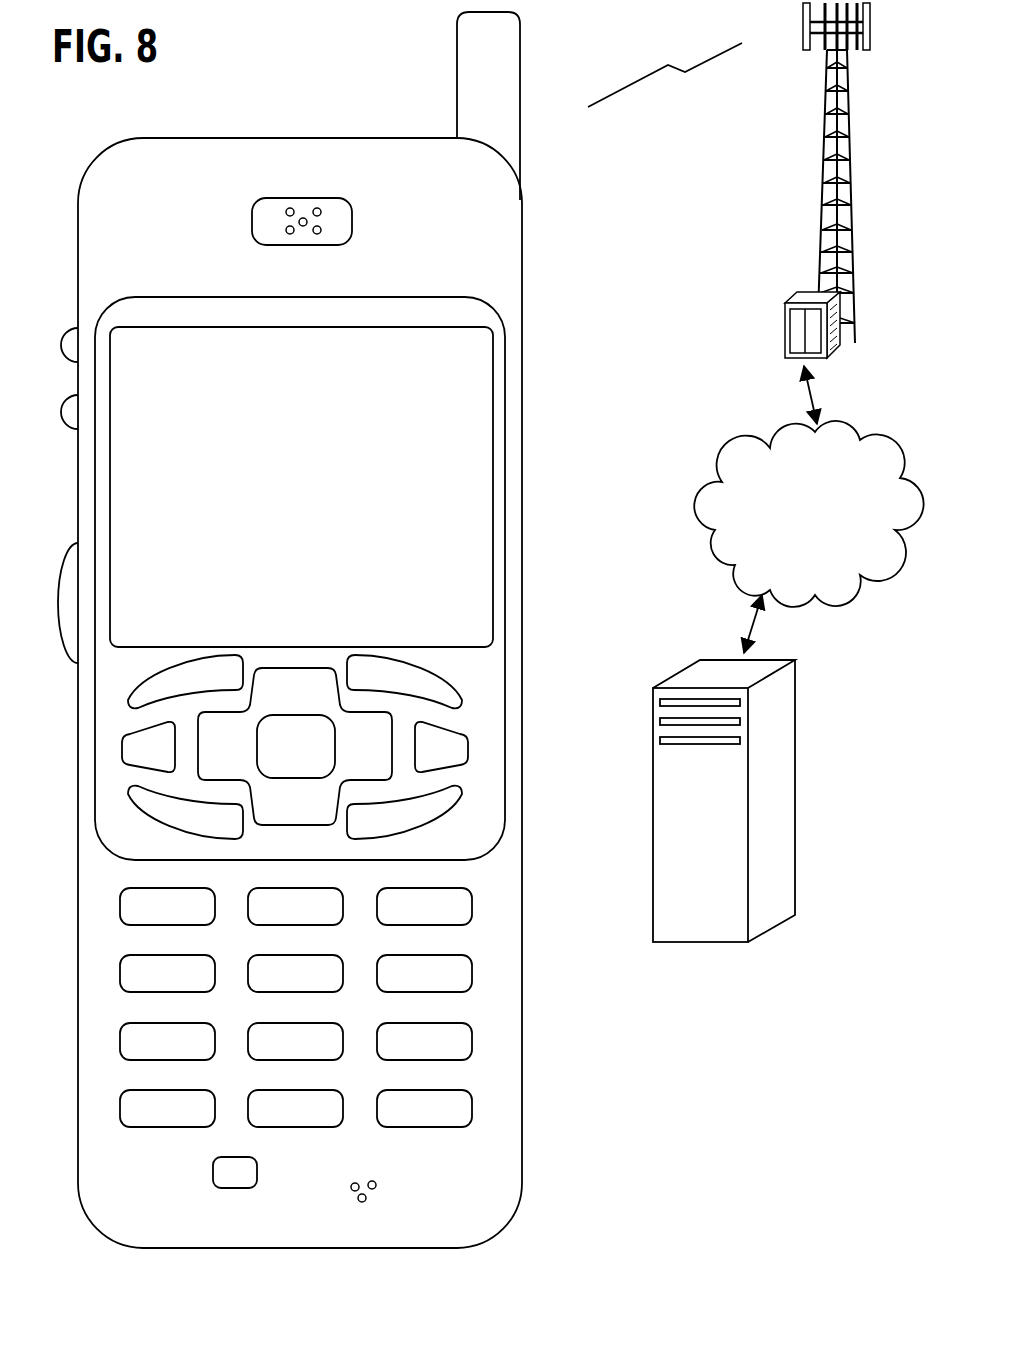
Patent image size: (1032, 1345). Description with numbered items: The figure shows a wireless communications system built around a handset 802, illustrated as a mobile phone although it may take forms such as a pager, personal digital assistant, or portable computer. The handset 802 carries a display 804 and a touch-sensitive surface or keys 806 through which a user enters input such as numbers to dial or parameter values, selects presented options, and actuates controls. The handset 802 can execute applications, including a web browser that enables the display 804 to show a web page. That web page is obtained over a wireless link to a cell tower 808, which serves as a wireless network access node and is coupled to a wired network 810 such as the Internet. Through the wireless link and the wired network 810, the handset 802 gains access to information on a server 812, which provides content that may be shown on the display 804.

The handset 802 is at (132, 1248).
The display 804 is at (494, 343).
The keys 806 is at (530, 1053).
The cell tower 808 is at (820, 198).
The wired network 810 is at (720, 566).
The server 812 is at (700, 943).